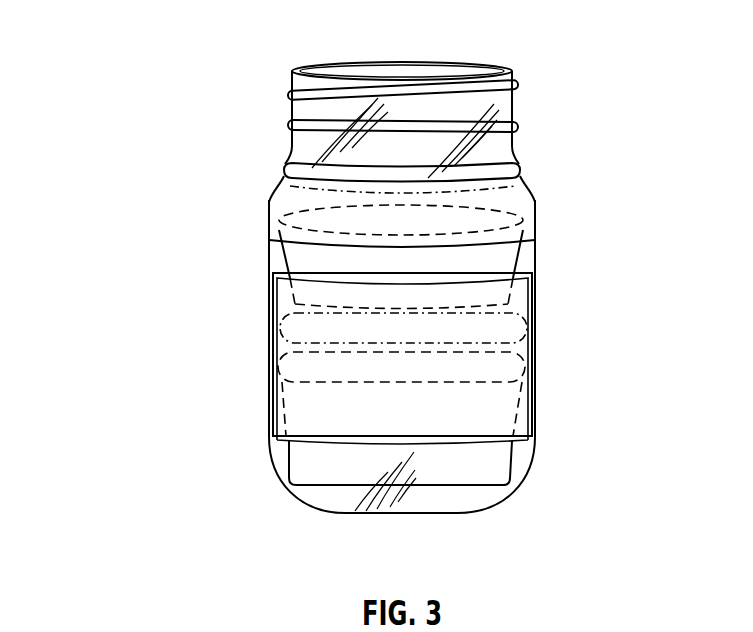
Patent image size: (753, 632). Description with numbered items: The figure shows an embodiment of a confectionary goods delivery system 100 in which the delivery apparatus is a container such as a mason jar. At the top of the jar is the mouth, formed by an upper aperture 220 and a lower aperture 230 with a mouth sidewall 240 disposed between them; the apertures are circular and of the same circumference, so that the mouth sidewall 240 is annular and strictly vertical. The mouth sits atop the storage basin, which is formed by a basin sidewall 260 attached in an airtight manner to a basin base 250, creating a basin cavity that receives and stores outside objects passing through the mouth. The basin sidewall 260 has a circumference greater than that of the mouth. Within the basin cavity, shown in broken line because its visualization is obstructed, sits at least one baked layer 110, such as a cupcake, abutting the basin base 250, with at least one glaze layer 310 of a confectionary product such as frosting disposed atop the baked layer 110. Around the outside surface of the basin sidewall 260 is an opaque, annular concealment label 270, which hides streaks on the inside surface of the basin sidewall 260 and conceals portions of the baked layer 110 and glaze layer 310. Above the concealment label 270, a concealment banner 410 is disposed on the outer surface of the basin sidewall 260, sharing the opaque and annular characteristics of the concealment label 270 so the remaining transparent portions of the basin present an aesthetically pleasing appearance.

The confectionary goods delivery system 100 is at (186, 37).
The baked layer 110 is at (505, 262).
The upper aperture 220 is at (492, 62).
The lower aperture 230 is at (511, 133).
The mouth sidewall 240 is at (288, 108).
The basin base 250 is at (430, 513).
The basin sidewall 260 is at (271, 252).
The concealment label 270 is at (271, 333).
The glaze layer 310 is at (291, 167).
The concealment banner 410 is at (531, 179).